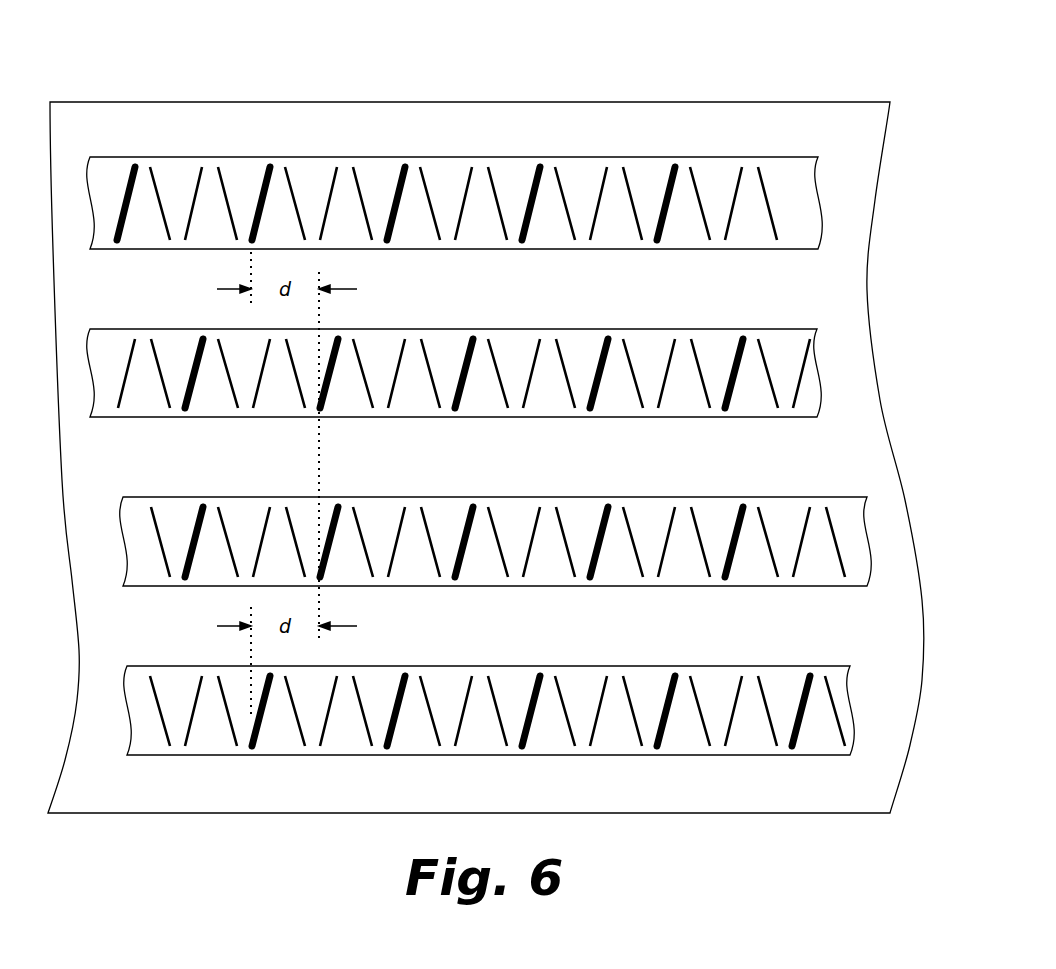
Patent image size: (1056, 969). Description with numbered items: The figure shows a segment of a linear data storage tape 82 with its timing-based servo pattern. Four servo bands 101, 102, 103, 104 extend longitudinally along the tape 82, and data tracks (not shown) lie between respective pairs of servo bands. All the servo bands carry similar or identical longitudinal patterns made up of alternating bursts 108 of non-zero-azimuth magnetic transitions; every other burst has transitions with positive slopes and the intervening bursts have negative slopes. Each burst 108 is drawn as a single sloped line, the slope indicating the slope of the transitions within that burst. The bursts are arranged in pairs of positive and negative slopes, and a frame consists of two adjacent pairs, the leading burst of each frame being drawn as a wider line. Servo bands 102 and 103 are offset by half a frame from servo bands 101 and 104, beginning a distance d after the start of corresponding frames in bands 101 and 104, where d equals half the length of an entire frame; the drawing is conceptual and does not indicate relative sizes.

The linear data storage tape 82 is at (758, 120).
The servo band 101 is at (512, 153).
The servo band 102 is at (810, 340).
The servo band 103 is at (859, 558).
The servo band 104 is at (840, 677).
The bursts 108 is at (268, 168).